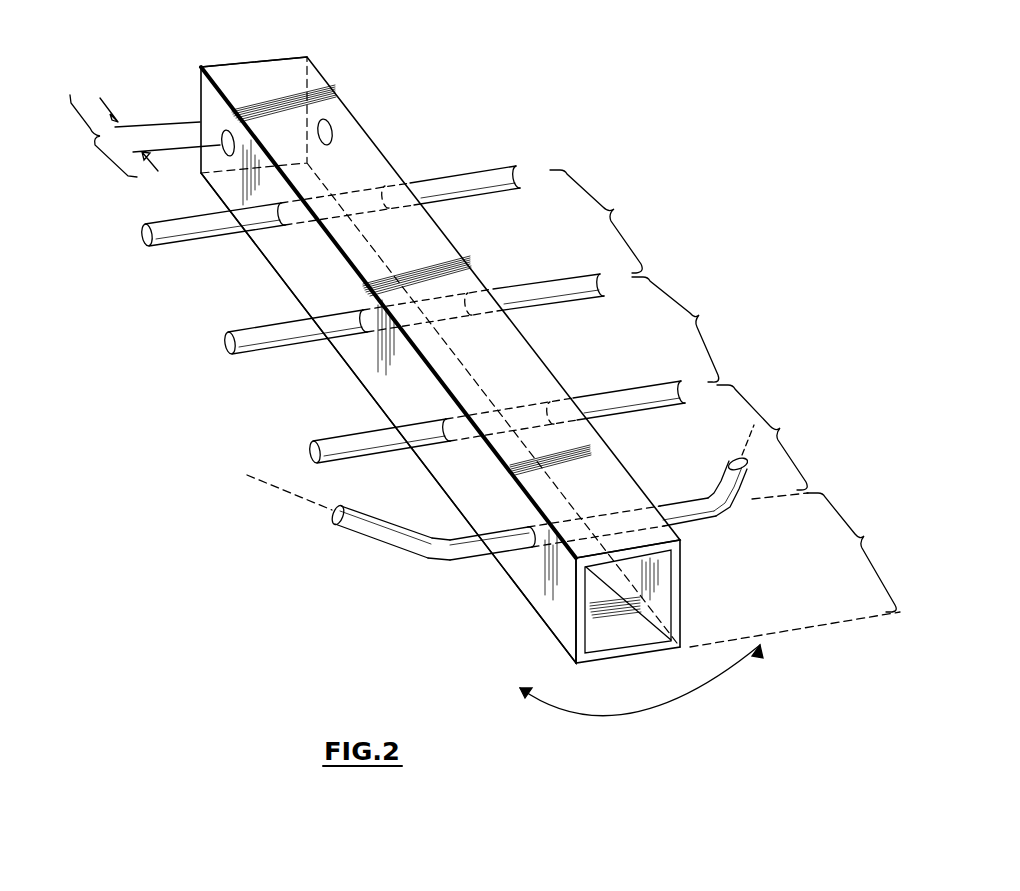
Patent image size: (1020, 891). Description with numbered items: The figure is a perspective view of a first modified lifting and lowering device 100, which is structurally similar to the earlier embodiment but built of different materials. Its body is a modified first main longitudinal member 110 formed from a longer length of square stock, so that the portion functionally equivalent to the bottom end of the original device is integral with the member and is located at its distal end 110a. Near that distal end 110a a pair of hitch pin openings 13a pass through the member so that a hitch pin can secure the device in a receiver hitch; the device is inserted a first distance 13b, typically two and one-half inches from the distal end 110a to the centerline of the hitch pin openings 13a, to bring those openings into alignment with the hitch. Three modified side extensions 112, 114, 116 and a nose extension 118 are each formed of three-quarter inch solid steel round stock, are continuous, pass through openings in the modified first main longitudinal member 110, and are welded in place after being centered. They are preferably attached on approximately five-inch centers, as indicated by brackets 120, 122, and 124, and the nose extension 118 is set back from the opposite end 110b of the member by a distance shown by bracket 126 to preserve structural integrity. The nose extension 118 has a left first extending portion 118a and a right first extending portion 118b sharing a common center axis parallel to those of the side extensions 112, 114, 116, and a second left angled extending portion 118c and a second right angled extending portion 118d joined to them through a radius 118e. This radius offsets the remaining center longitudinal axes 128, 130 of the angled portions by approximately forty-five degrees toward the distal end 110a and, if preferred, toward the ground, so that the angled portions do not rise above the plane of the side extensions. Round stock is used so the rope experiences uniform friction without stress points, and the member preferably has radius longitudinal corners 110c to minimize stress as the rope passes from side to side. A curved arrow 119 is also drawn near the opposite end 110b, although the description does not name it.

The first modified lifting and lowering device 100 is at (533, 96).
The modified first main longitudinal member 110 is at (358, 382).
The distal end 110a is at (250, 58).
The opposite end 110b is at (652, 650).
The radius longitudinal corners 110c is at (293, 293).
The modified side extension 112 is at (144, 236).
The modified side extension 114 is at (227, 344).
The modified side extension 116 is at (312, 453).
The nose extension 118 is at (549, 538).
The left first extending portion 118a is at (512, 548).
The right first extending portion 118b is at (700, 524).
The second left angled extending portion 118c is at (380, 530).
The second right angled extending portion 118d is at (725, 478).
The radius 118e is at (440, 540).
The rotation direction arrow 119 is at (670, 722).
The bracket 120 is at (604, 221).
The bracket 122 is at (686, 329).
The bracket 124 is at (769, 437).
The bracket 126 is at (798, 570).
The center longitudinal axis 128 is at (748, 436).
The center longitudinal axis 130 is at (290, 493).
The hitch pin openings 13a is at (224, 156).
The first distance 13b is at (82, 138).